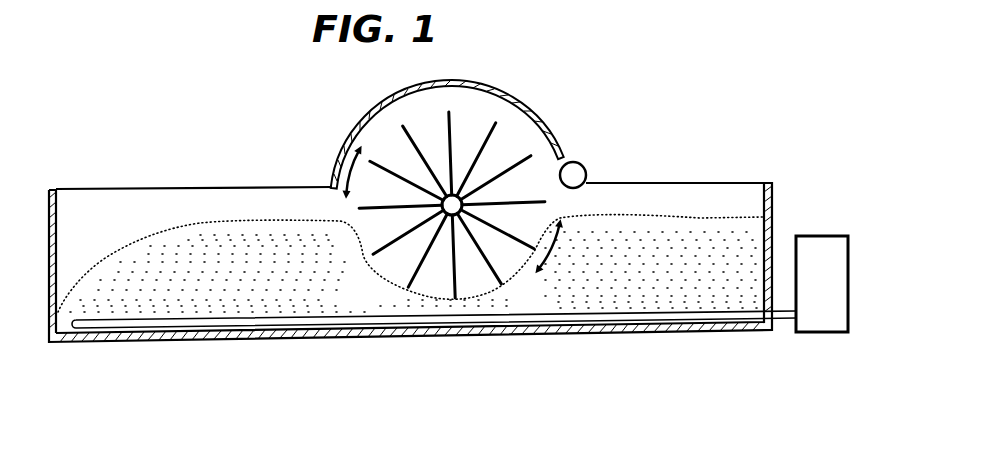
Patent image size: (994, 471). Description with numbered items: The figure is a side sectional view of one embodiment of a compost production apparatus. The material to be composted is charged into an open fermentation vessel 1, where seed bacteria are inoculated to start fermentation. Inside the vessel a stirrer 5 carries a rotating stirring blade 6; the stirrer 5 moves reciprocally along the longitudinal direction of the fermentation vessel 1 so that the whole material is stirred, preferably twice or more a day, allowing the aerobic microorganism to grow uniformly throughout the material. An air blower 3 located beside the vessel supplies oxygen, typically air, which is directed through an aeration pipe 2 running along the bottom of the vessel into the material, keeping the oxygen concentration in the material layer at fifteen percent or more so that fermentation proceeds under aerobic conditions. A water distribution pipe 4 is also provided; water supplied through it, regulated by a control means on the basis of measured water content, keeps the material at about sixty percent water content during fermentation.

The open fermentation vessel 1 is at (185, 188).
The aeration pipe 2 is at (138, 332).
The air blower 3 is at (815, 237).
The water distribution pipe 4 is at (587, 171).
The stirrer 5 is at (553, 130).
The stirring blade 6 is at (452, 127).